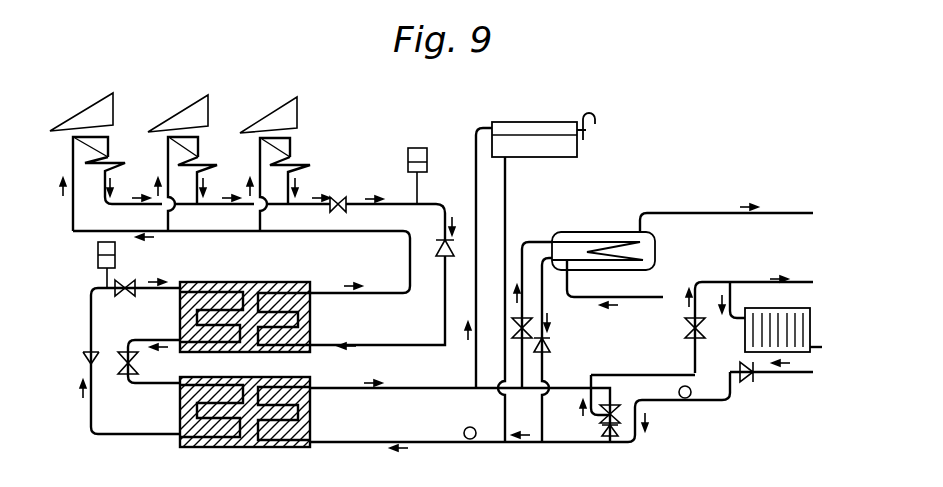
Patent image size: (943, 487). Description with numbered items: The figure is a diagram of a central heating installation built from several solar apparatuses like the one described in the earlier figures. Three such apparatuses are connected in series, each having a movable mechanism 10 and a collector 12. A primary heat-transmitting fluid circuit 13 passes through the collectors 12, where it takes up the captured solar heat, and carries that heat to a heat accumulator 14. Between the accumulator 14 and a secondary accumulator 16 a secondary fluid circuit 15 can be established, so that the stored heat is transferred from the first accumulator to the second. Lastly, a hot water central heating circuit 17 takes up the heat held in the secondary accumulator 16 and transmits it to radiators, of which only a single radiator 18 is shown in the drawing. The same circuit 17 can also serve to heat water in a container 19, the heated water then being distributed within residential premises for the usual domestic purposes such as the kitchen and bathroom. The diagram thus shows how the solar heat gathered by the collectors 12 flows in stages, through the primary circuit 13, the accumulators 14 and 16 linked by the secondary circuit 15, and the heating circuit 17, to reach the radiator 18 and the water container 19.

The movable mechanism 10 is at (113, 108).
The collector 12 is at (108, 127).
The primary heat-transmitting fluid circuit 13 is at (400, 205).
The heat accumulator 14 is at (311, 315).
The secondary fluid circuit 15 is at (130, 340).
The secondary accumulator 16 is at (311, 407).
The hot water central heating circuit 17 is at (442, 388).
The radiator 18 is at (807, 350).
The container 19 is at (614, 232).